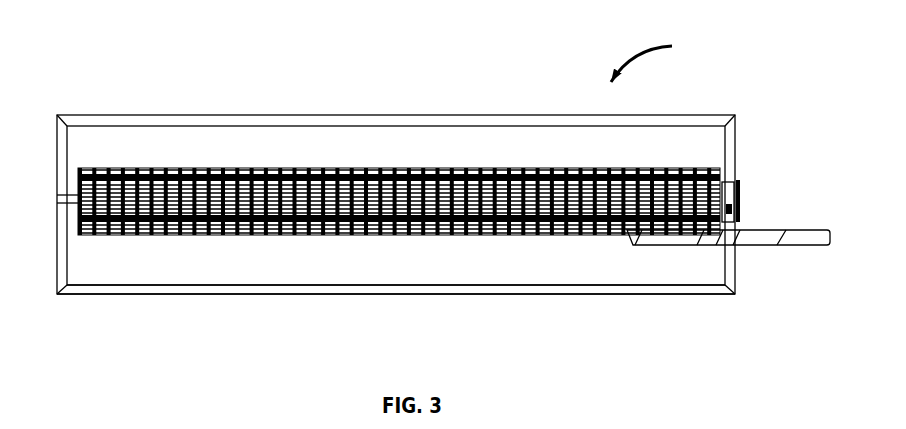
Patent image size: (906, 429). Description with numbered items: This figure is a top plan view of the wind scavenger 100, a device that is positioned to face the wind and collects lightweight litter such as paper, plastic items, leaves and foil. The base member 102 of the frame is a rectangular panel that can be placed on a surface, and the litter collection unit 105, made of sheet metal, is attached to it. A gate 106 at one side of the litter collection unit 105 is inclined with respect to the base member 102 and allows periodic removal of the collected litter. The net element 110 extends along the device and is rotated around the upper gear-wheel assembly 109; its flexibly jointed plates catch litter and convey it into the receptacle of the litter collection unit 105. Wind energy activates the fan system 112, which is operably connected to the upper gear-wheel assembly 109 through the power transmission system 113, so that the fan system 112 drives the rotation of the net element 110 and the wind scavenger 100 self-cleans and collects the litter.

The wind scavenger 100 is at (660, 57).
The base member 102 is at (93, 117).
The litter collection unit 105 is at (222, 143).
The gate 106 is at (158, 270).
The upper gear-wheel assembly 109 is at (734, 182).
The net element 110 is at (360, 165).
The fan system 112 is at (773, 227).
The power transmission system 113 is at (743, 185).